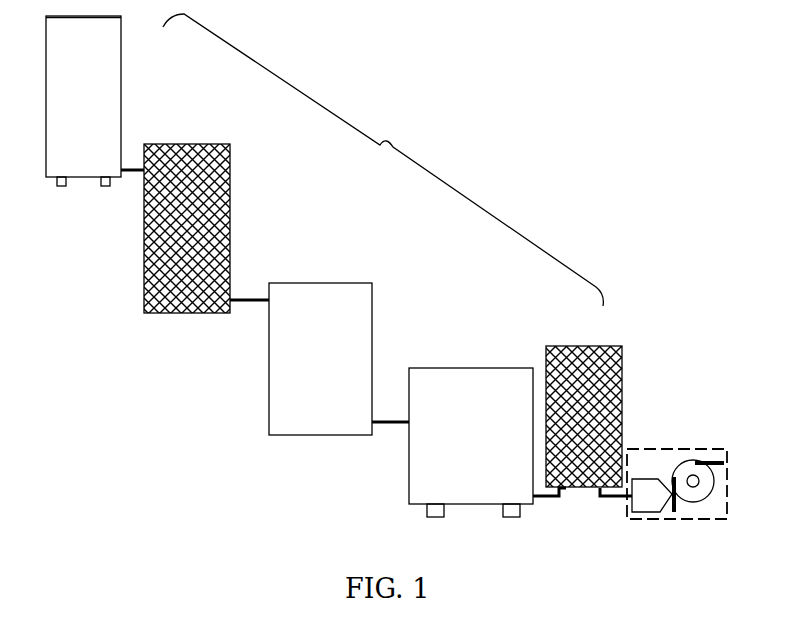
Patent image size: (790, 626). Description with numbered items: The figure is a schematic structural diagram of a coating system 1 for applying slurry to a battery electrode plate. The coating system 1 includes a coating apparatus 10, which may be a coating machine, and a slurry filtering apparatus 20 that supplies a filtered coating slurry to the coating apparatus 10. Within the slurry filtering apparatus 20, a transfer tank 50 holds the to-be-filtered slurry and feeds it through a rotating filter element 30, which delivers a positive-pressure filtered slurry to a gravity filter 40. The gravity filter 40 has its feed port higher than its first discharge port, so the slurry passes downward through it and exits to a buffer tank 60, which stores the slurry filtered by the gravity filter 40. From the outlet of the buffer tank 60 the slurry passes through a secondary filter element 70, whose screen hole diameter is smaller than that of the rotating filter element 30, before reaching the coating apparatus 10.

The coating system 1 is at (517, 89).
The coating apparatus 10 is at (667, 449).
The slurry filtering apparatus 20 is at (392, 143).
The rotating filter element 30 is at (206, 145).
The gravity filter 40 is at (322, 283).
The transfer tank 50 is at (121, 92).
The buffer tank 60 is at (436, 368).
The secondary filter element 70 is at (570, 346).